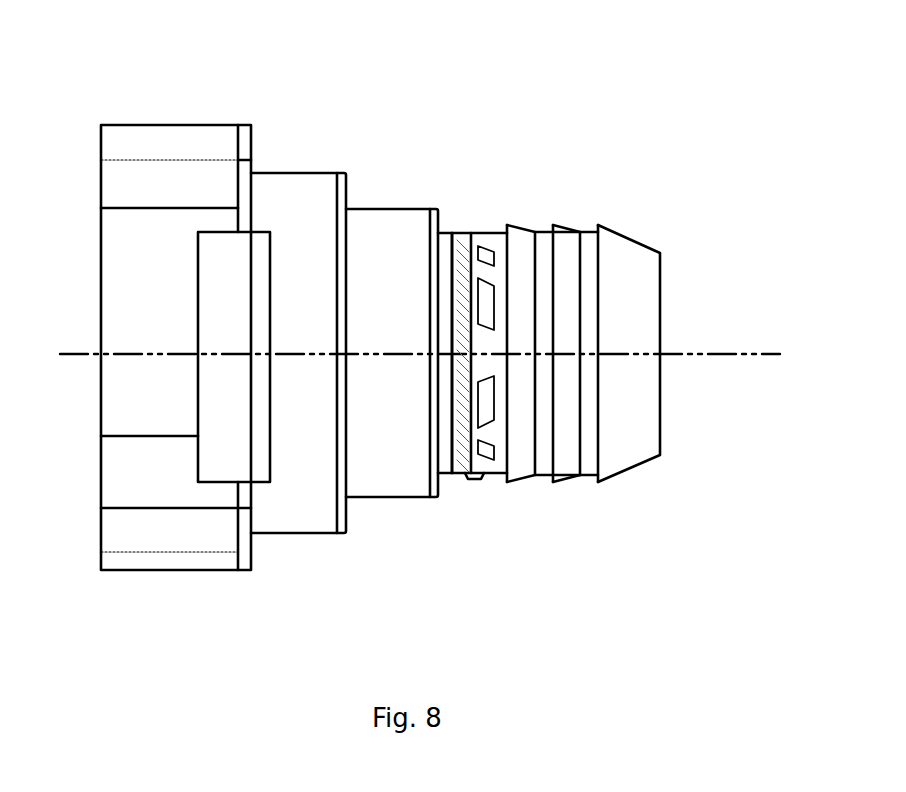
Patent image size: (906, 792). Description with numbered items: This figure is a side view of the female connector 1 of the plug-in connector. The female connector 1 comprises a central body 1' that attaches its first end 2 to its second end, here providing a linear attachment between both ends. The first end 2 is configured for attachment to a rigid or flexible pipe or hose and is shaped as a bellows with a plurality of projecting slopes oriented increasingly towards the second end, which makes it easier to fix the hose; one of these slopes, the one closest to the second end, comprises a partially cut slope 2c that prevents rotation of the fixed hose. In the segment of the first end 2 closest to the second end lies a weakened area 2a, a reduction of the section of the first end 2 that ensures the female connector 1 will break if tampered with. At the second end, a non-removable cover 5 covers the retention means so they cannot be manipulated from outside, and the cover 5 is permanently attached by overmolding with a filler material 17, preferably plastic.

The female connector 1 is at (143, 289).
The central body 1' is at (351, 387).
The first end 2 is at (577, 210).
The weakened area 2a is at (461, 235).
The partially cut slope 2c is at (483, 490).
The cover 5 is at (141, 537).
The filler material 17 is at (232, 258).